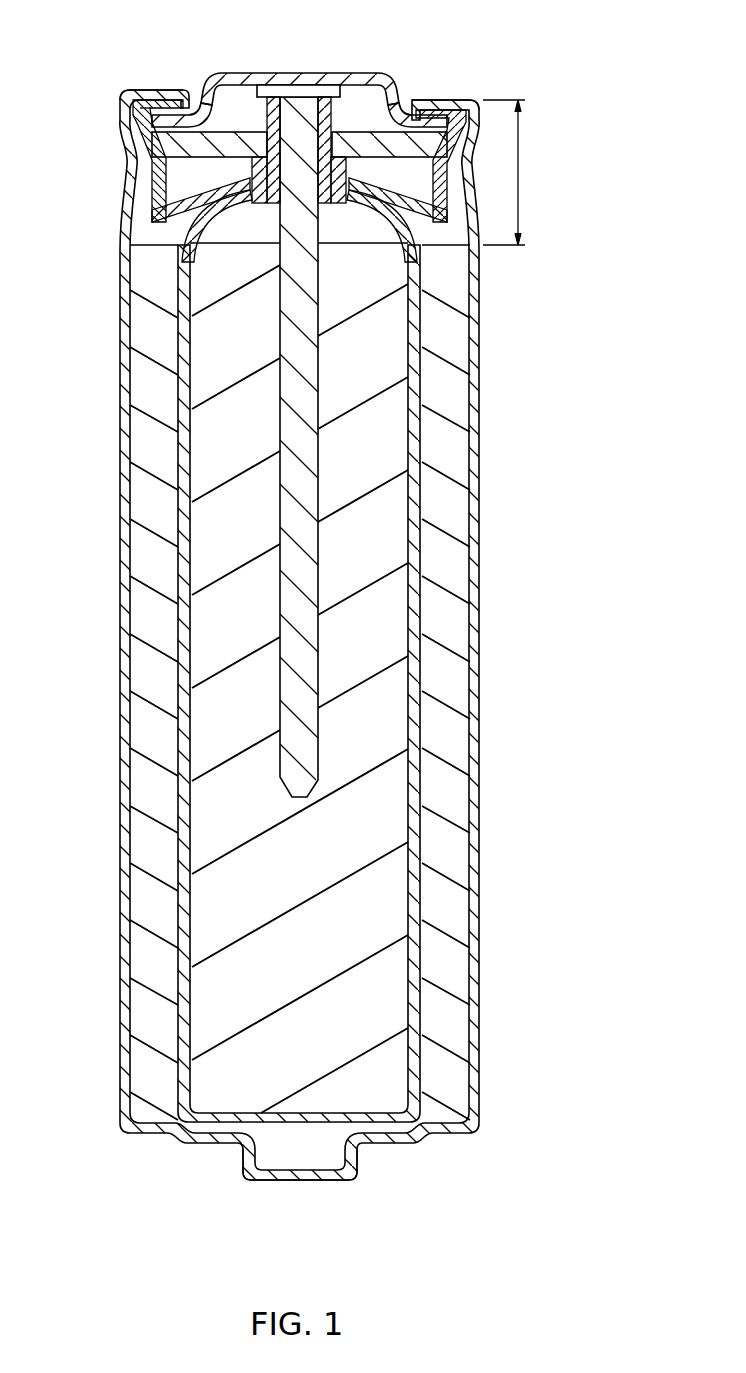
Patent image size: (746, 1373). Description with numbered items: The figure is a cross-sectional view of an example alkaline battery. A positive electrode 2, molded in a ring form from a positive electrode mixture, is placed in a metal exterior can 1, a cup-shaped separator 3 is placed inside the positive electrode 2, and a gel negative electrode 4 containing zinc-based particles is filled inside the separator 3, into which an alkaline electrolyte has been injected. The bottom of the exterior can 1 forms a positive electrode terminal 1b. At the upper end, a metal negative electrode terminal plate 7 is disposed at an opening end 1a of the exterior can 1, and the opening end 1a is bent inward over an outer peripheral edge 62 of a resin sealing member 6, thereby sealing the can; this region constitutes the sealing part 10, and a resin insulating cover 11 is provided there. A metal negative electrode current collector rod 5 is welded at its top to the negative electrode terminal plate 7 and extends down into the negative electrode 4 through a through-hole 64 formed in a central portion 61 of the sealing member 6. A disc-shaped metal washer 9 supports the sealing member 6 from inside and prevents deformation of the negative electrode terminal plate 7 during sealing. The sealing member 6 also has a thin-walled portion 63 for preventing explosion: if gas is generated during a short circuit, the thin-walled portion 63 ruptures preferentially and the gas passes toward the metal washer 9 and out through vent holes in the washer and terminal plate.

The exterior can 1 is at (125, 299).
The opening end 1a is at (120, 118).
The positive electrode terminal 1b is at (300, 1182).
The positive electrode 2 is at (150, 378).
The separator 3 is at (183, 452).
The negative electrode 4 is at (220, 540).
The negative electrode current collector rod 5 is at (295, 610).
The sealing member 6 is at (152, 217).
The negative electrode terminal plate 7 is at (318, 72).
The metal washer 9 is at (377, 130).
The sealing part 10 is at (533, 173).
The resin insulating cover 11 is at (450, 100).
The central portion 61 is at (262, 120).
The outer peripheral edge 62 is at (124, 148).
The thin-walled portion 63 is at (372, 238).
The through-hole 64 is at (268, 85).